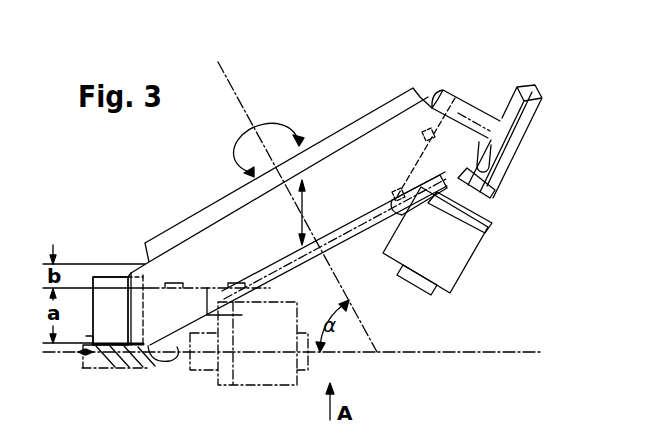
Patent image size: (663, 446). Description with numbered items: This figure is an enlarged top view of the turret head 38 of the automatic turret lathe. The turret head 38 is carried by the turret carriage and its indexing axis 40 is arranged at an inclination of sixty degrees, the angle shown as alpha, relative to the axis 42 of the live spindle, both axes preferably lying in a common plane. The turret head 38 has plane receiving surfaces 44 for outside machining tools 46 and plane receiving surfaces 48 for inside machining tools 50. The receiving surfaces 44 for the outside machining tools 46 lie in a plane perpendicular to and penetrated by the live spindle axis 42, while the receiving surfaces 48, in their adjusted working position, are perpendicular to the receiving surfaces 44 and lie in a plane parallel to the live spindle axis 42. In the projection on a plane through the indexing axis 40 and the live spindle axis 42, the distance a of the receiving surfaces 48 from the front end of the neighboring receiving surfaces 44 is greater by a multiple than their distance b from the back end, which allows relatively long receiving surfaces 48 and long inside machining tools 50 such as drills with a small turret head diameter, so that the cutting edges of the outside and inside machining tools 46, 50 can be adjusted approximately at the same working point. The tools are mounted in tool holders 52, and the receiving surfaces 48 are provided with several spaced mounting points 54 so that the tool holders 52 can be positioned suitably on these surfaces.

The turret head 38 is at (475, 90).
The indexing axis 40 is at (232, 70).
The axis of live spindle 42 is at (487, 352).
The receiving surfaces for outside machining tools 44 is at (134, 282).
The outside machining tools 46 is at (97, 362).
The receiving surfaces for inside machining tools 48 is at (452, 94).
The inside machining tools 50 is at (522, 122).
The tool holders 52 is at (455, 241).
The mounting points 54 is at (397, 193).